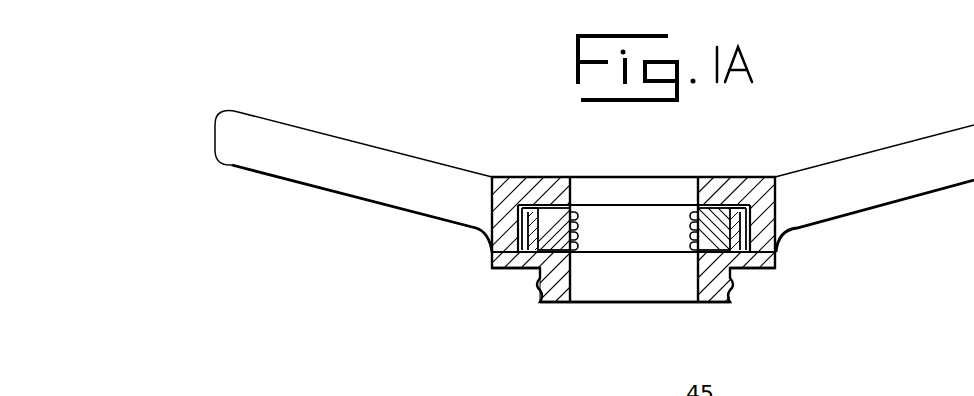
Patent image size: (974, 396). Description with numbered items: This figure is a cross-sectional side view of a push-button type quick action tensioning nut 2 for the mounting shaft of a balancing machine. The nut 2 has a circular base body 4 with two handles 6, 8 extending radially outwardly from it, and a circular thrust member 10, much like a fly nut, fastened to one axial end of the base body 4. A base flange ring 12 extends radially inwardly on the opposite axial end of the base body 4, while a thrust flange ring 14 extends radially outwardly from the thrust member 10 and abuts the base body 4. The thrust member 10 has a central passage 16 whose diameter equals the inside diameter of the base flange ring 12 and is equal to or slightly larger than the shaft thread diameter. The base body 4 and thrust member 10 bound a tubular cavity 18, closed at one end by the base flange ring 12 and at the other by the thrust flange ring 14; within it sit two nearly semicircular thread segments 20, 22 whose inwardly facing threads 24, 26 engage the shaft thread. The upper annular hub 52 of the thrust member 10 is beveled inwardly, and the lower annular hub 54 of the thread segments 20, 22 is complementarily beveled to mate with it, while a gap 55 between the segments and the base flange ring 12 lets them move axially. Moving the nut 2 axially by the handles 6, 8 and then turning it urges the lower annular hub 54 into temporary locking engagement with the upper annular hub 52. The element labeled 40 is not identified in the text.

The quick action tensioning nut 2 is at (494, 339).
The circular base body 4 is at (761, 226).
The handle 6 is at (404, 168).
The handle 8 is at (902, 155).
The circular thrust member 10 is at (714, 296).
The base flange ring 12 is at (725, 182).
The thrust flange ring 14 is at (742, 259).
The central passage 16 is at (574, 281).
The tubular cavity 18 is at (765, 193).
The thread segment 20 is at (555, 217).
The thread segment 22 is at (743, 218).
The thread 24 is at (584, 216).
The thread 26 is at (690, 212).
The left seal pocket 40 is at (527, 212).
The upper annular hub 52 is at (552, 243).
The lower annular hub 54 is at (559, 248).
The gap 55 is at (573, 212).